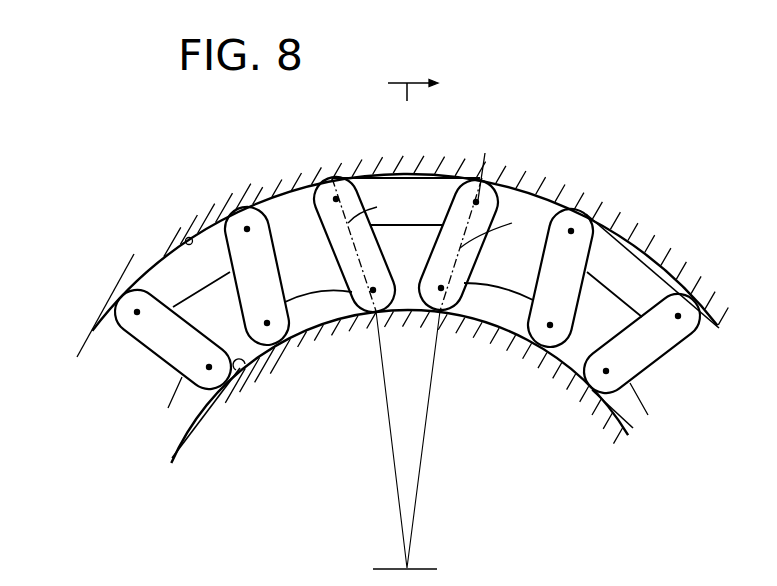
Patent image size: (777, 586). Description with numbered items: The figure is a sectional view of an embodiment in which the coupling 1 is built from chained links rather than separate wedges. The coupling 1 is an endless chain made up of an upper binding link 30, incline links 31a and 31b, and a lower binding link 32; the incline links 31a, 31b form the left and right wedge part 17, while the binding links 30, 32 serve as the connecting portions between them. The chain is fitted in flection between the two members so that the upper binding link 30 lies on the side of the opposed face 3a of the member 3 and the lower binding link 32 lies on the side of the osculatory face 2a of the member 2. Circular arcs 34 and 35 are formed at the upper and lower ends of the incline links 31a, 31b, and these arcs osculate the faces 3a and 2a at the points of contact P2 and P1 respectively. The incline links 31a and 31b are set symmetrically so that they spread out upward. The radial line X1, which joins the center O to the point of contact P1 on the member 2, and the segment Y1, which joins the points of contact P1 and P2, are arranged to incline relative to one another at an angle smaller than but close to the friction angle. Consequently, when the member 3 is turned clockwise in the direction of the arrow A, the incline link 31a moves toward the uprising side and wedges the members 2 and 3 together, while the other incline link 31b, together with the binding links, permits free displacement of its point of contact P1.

The coupling 1 is at (534, 196).
The member 2 is at (223, 438).
The osculatory face of the member 2 2a is at (238, 372).
The member 3 is at (103, 260).
The opposed face of the member 3 3a is at (186, 240).
The wedge part 17 is at (280, 188).
The upper binding link 30 is at (433, 175).
The incline link 31a is at (352, 207).
The incline link 31b is at (512, 195).
The lower binding link 32 is at (320, 318).
The circular arc 34 is at (313, 187).
The circular arc 35 is at (375, 313).
The point of contact P1 is at (376, 313).
The point of contact P2 is at (333, 178).
The radial line X1 is at (368, 252).
The segment Y1 is at (443, 220).
The arrow A is at (413, 102).
The center O is at (406, 440).